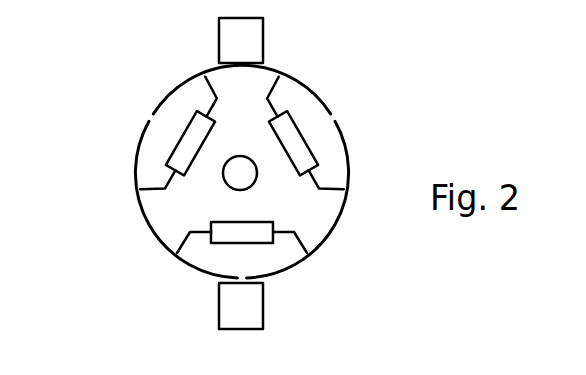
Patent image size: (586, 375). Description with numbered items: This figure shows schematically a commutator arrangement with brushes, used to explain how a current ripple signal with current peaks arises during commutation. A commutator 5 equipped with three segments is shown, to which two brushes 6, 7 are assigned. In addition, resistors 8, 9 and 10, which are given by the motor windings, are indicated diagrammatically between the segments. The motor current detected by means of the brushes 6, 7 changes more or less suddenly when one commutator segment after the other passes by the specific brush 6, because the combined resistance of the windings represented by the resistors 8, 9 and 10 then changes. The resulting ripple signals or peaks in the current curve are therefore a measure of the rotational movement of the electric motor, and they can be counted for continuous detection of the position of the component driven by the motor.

The commutator 5 is at (120, 186).
The brush 6 is at (263, 39).
The brush 7 is at (263, 305).
The resistor 8 is at (298, 122).
The resistor 9 is at (220, 245).
The resistor 10 is at (185, 122).